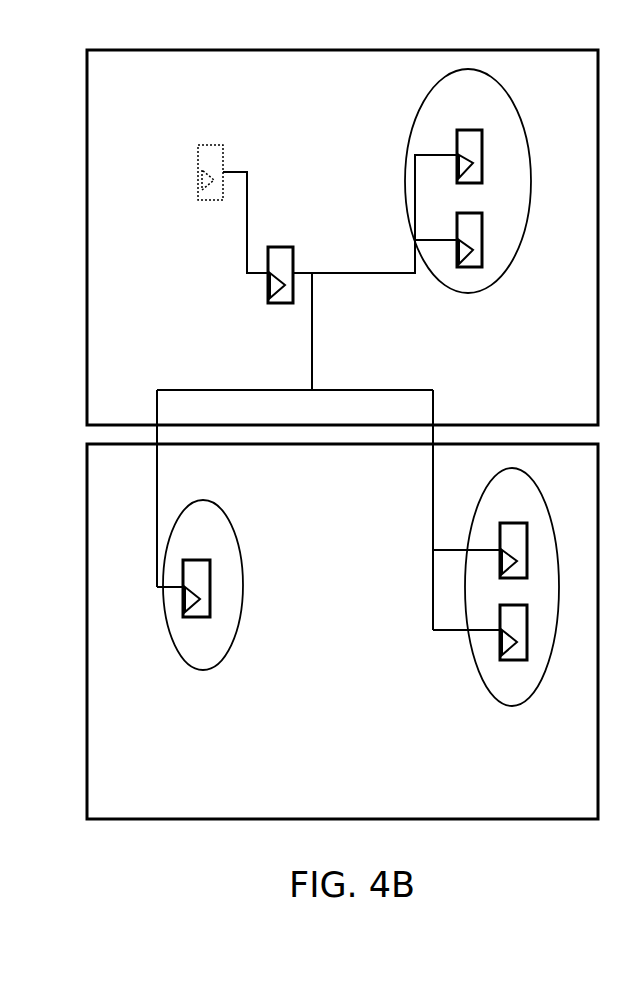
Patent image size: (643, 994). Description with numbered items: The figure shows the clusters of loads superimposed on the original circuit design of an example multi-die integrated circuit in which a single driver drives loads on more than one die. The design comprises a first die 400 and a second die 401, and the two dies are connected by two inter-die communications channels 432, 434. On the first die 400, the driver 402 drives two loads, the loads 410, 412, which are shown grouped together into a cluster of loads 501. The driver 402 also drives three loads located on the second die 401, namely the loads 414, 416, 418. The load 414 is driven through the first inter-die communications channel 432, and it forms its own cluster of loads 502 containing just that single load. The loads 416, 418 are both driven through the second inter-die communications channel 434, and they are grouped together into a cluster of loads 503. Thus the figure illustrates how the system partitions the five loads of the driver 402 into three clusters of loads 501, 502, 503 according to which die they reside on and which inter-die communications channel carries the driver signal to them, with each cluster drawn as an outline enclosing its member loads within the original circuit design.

The first die 400 is at (567, 124).
The second die 401 is at (570, 798).
The driver 402 is at (295, 255).
The load 410 is at (482, 166).
The load 412 is at (482, 240).
The load 414 is at (210, 580).
The load 416 is at (527, 540).
The load 418 is at (527, 633).
The first inter-die communications channel 432 is at (158, 435).
The second inter-die communications channel 434 is at (432, 436).
The cluster of loads 501 is at (495, 286).
The cluster of loads 502 is at (232, 645).
The cluster of loads 503 is at (478, 675).